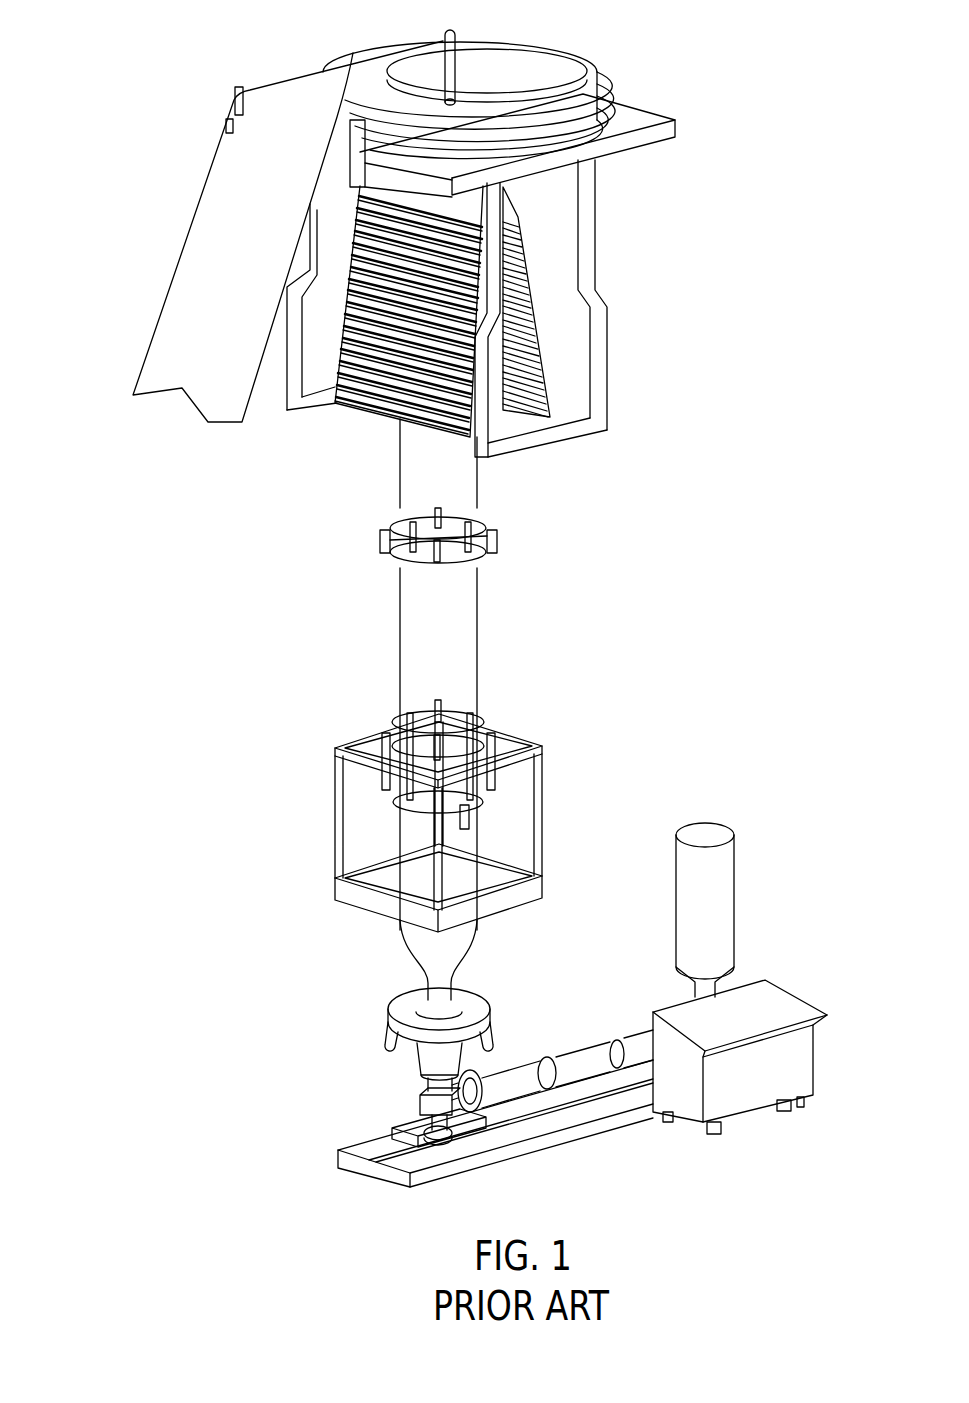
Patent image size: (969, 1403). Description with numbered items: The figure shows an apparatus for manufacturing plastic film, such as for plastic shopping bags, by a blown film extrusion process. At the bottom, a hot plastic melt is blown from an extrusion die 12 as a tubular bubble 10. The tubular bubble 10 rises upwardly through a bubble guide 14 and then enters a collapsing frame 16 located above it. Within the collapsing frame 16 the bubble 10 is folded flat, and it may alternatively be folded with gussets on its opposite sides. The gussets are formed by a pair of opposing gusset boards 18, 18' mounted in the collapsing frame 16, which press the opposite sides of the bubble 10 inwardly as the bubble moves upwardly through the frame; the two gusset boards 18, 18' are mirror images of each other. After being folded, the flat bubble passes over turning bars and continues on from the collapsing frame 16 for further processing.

The tubular bubble 10 is at (455, 639).
The extrusion die 12 is at (470, 1000).
The bubble guide 14 is at (500, 522).
The collapsing frame 16 is at (343, 317).
The gusset board 18 is at (533, 331).
The gusset board 18' is at (364, 311).